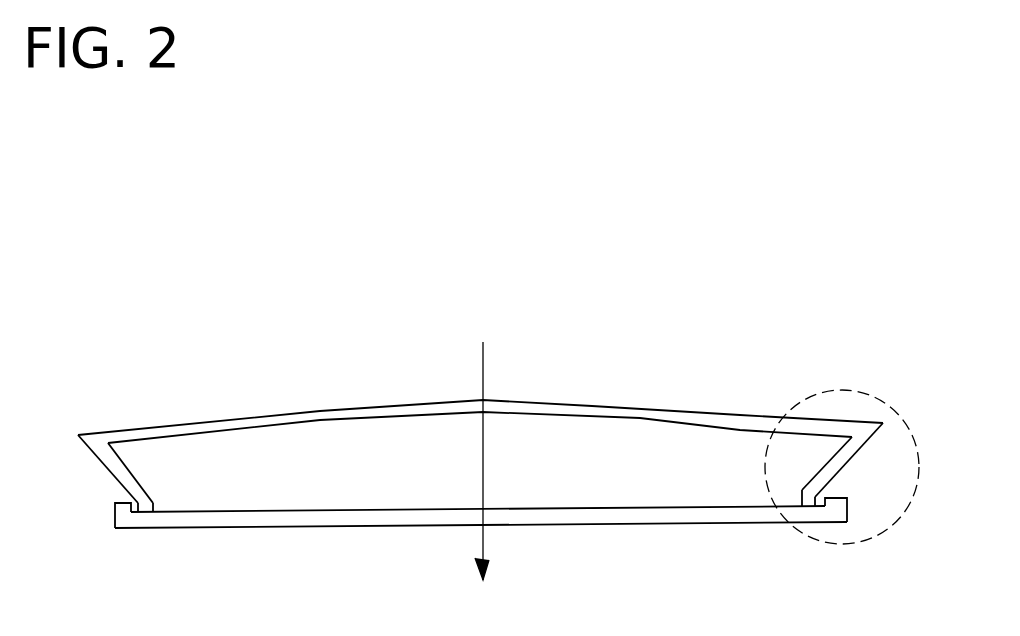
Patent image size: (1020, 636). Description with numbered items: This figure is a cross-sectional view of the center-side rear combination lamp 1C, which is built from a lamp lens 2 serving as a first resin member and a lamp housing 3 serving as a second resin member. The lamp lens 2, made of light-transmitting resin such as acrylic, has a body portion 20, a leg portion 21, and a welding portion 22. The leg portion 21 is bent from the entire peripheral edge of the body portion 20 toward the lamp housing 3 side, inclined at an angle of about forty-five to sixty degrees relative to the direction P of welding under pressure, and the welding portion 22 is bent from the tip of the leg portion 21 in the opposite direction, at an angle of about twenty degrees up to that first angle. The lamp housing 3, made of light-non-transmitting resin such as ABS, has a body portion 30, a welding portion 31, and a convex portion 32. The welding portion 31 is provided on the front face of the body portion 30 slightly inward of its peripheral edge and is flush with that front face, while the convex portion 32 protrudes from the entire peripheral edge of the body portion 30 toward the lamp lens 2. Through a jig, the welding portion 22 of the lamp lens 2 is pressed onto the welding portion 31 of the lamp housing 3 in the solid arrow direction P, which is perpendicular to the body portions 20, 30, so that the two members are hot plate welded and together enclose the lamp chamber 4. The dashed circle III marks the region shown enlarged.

The center-side rear combination lamp 1C is at (390, 328).
The lamp lens 2 is at (592, 408).
The body portion 20 is at (640, 410).
The leg portion 21 is at (132, 470).
The welding portion 22 is at (153, 503).
The lamp housing 3 is at (533, 526).
The body portion 30 is at (585, 523).
The welding portion 31 is at (165, 510).
The convex portion 32 is at (115, 513).
The lamp chamber 4 is at (558, 468).
The direction of welding under pressure P is at (485, 358).
The enlarged region III is at (868, 388).